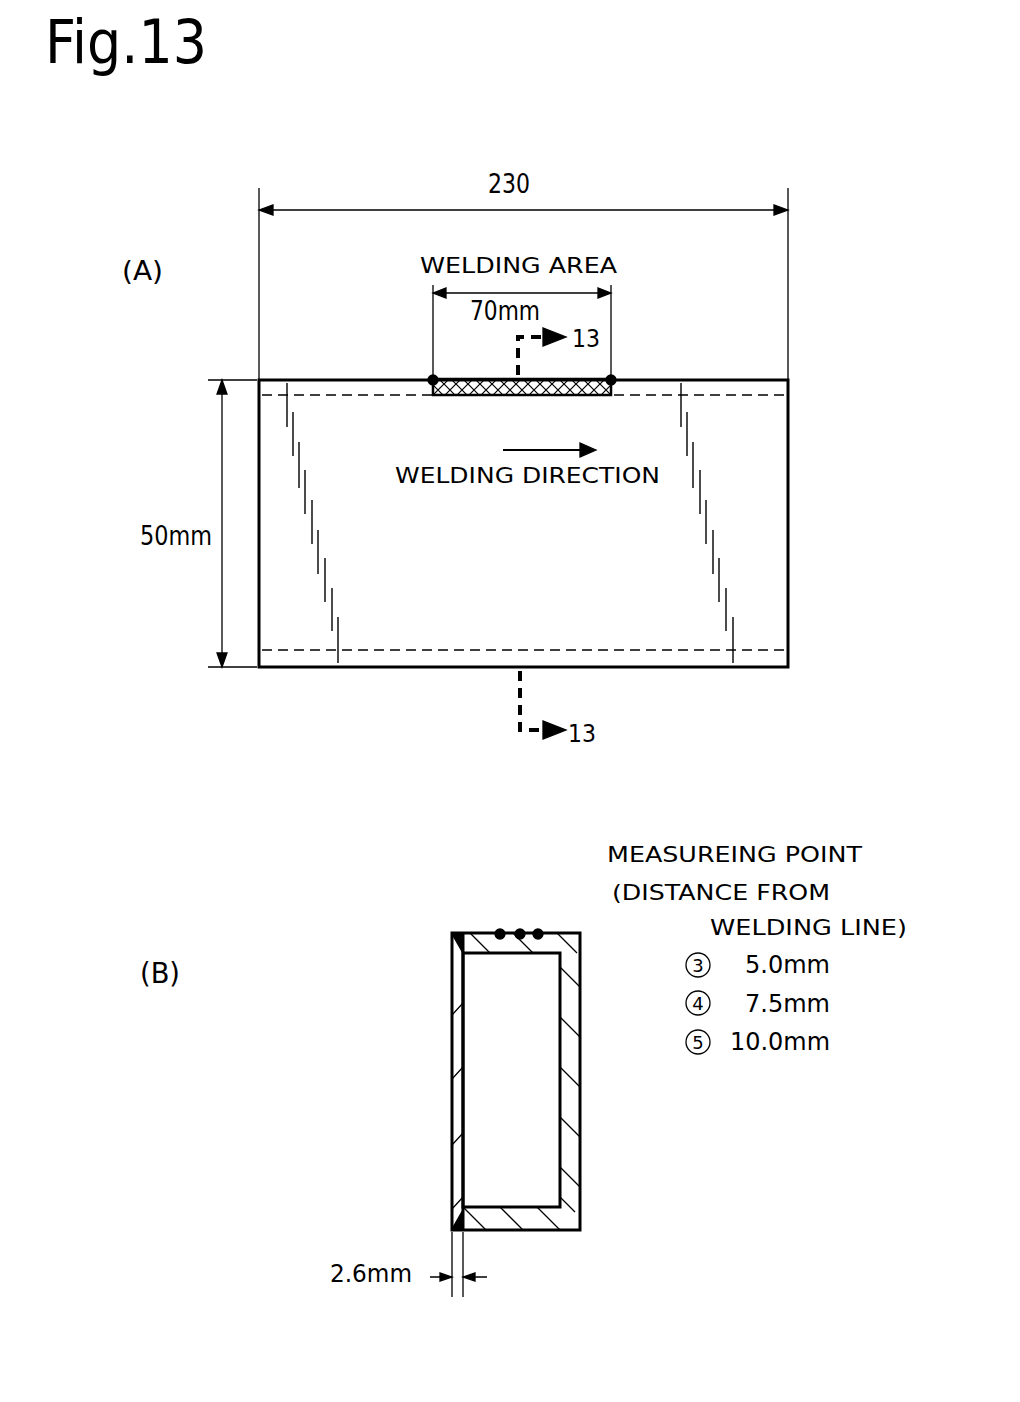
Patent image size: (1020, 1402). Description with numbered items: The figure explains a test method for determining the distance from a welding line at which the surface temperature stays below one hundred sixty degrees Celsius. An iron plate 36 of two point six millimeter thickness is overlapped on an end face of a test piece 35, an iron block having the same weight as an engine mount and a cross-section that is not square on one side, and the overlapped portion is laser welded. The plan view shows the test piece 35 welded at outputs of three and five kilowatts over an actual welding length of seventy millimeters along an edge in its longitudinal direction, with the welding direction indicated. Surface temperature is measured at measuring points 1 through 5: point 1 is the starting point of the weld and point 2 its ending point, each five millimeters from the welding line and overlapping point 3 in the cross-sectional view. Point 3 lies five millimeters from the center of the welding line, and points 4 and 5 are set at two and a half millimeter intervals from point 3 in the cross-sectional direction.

The measuring point at welding starting point 1 is at (431, 378).
The measuring point at welding ending point 2 is at (612, 378).
The measuring point at center of welding line 3 is at (500, 930).
The measuring point 4 is at (520, 930).
The measuring point 5 is at (538, 930).
The test piece 35 is at (778, 505).
The iron plate 36 is at (452, 1090).